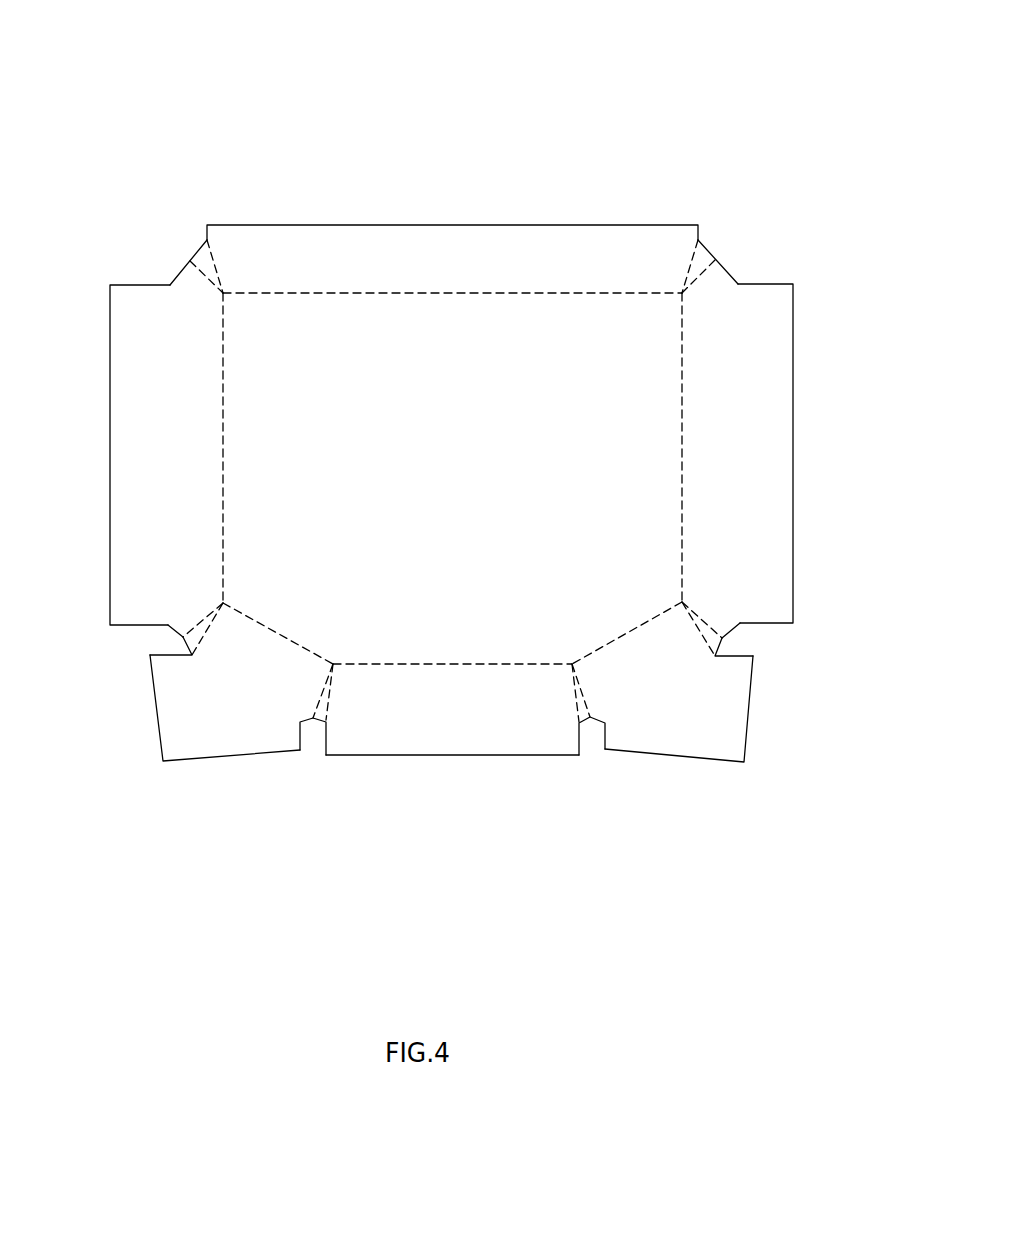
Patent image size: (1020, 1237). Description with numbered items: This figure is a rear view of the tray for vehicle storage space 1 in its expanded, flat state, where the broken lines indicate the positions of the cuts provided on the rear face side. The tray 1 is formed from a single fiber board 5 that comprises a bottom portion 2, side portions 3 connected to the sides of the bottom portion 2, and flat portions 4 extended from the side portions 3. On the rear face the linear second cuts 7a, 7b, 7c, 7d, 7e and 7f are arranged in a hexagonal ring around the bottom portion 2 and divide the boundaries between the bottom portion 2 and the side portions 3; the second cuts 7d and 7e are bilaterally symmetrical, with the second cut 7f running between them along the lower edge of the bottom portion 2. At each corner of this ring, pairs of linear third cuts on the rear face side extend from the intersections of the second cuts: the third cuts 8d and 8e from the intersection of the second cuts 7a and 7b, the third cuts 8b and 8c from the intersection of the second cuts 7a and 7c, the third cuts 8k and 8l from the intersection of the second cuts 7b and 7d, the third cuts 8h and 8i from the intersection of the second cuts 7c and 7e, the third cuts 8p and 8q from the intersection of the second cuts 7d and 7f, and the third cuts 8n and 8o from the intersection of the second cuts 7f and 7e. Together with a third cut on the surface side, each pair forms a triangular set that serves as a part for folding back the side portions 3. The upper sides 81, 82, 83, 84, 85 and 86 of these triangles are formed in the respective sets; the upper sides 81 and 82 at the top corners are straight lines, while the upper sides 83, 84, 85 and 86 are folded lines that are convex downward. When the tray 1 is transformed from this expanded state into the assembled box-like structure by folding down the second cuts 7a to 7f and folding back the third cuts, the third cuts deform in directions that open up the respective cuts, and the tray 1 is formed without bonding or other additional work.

The tray for vehicle storage space 1 is at (638, 80).
The bottom portion 2 is at (425, 355).
The side portion 3 is at (187, 440).
The flat portion 4 is at (693, 730).
The fiber board 5 is at (330, 225).
The second cut 7a is at (540, 293).
The second cut 7b is at (225, 394).
The second cut 7c is at (680, 400).
The second cut 7d is at (273, 628).
The second cut 7e is at (640, 612).
The second cut 7f is at (455, 664).
The upper side 81 is at (708, 250).
The upper side 82 is at (203, 245).
The upper side 83 is at (722, 645).
The upper side 84 is at (183, 645).
The upper side 85 is at (590, 717).
The upper side 86 is at (317, 718).
The third cut 8b is at (690, 275).
The third cut 8c is at (700, 278).
The third cut 8d is at (198, 272).
The third cut 8e is at (215, 262).
The third cut 8h is at (713, 623).
The third cut 8i is at (707, 657).
The third cut 8k is at (200, 623).
The third cut 8l is at (205, 638).
The third cut 8n is at (572, 703).
The third cut 8o is at (587, 700).
The third cut 8p is at (300, 725).
The third cut 8q is at (283, 717).